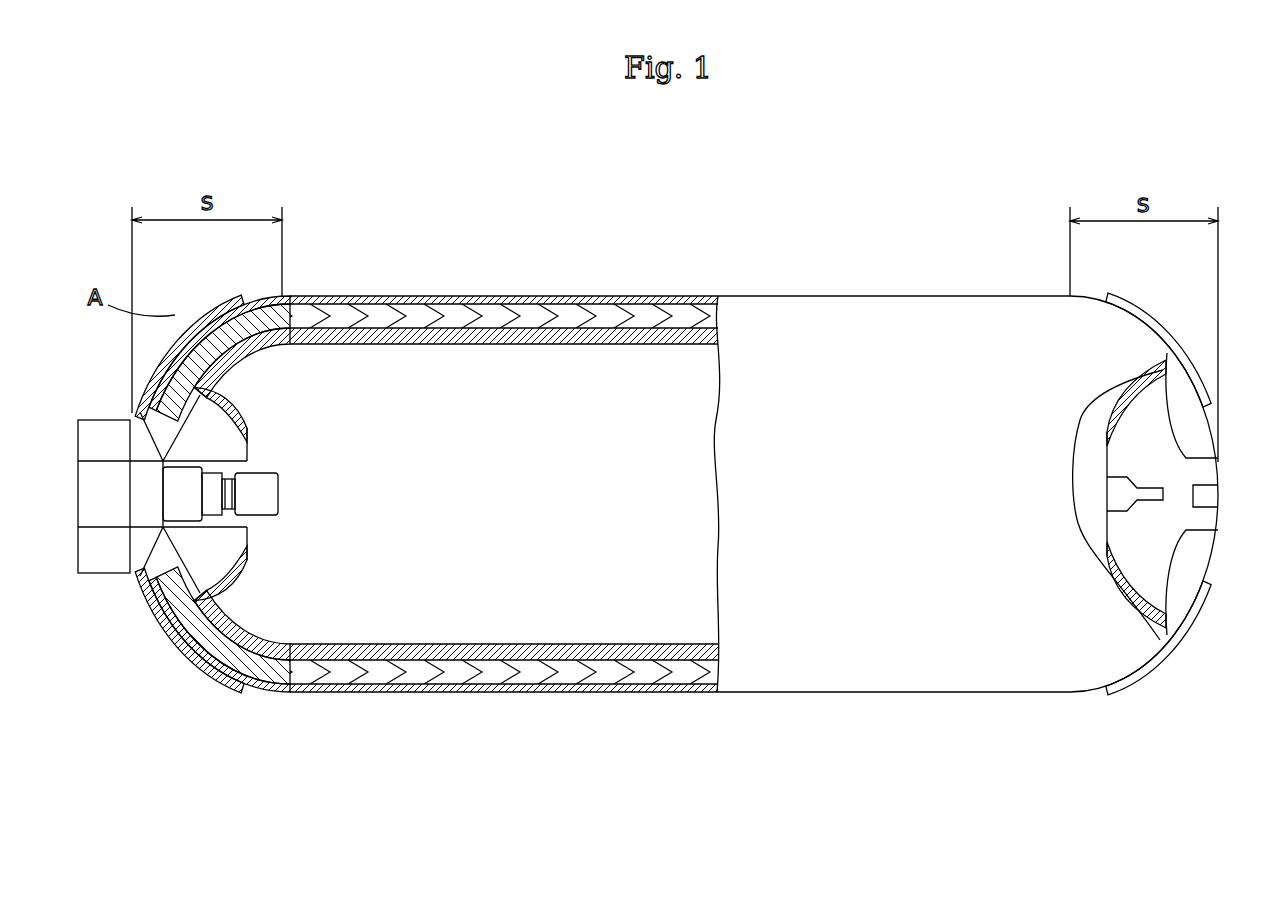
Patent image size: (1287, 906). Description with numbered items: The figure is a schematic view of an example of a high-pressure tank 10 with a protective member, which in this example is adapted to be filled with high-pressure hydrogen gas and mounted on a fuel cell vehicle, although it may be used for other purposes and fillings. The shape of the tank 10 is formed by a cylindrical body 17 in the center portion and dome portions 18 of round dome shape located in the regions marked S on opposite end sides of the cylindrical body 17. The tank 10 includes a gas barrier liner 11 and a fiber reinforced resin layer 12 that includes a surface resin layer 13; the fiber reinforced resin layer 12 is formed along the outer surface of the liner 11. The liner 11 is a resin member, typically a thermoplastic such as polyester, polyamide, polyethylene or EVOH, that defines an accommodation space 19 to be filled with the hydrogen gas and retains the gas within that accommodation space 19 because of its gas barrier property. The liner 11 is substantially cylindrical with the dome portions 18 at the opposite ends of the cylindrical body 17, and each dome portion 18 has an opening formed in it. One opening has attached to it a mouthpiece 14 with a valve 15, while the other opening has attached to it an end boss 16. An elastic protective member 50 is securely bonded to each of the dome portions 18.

The high-pressure tank 10 is at (929, 226).
The gas barrier liner 11 is at (456, 652).
The fiber reinforced resin layer 12 is at (508, 667).
The surface resin layer 13 is at (582, 687).
The mouthpiece 14 is at (140, 410).
The valve 15 is at (100, 560).
The end boss 16 is at (1157, 543).
The cylindrical body 17 is at (977, 692).
The dome portion 18 is at (203, 668).
The accommodation space 19 is at (633, 375).
The elastic protective member 50 is at (157, 613).